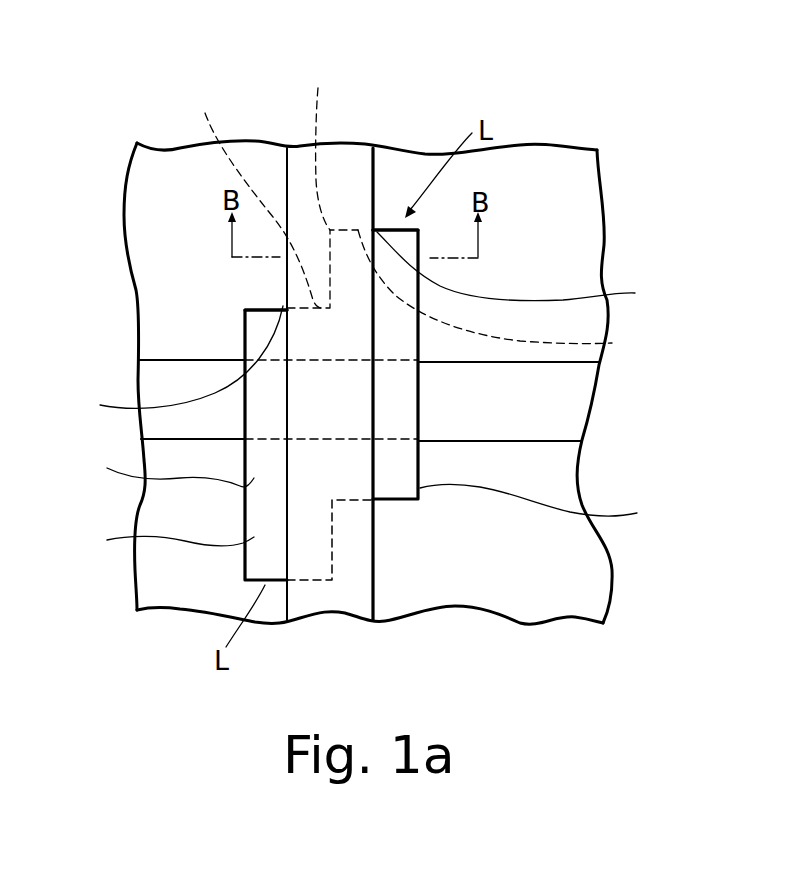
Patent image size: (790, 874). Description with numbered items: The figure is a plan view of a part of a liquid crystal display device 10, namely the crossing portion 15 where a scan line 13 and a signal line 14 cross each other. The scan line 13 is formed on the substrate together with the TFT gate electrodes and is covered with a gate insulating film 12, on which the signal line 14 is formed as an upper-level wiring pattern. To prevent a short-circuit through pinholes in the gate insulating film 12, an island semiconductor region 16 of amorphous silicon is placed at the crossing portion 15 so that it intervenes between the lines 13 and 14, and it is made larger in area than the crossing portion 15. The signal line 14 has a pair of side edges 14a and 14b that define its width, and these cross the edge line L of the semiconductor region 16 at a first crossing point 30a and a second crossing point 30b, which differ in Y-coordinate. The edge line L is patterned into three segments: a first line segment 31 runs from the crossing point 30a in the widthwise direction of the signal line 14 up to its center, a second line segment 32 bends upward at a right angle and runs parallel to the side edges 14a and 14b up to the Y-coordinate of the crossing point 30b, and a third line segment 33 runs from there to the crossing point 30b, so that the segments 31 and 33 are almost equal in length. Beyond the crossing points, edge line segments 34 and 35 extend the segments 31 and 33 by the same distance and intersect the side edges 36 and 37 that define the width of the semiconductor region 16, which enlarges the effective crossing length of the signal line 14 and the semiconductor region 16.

The liquid crystal display device 10 is at (132, 84).
The gate insulating film 12 is at (572, 582).
The scan line 13 is at (572, 423).
The signal line 14 is at (357, 590).
The side edge of signal line 14a is at (289, 182).
The side edge of signal line 14b is at (377, 150).
The crossing portion 15 is at (237, 297).
The island semiconductor region 16 is at (160, 546).
The first crossing point 30a is at (287, 307).
The second crossing point 30b is at (373, 228).
The first line segment 31 is at (254, 195).
The second line segment 32 is at (322, 183).
The third line segment 33 is at (612, 343).
The edge line segment 34 is at (170, 362).
The edge line segment 35 is at (525, 272).
The side edge of semiconductor region 36 is at (160, 470).
The side edge of semiconductor region 37 is at (549, 512).